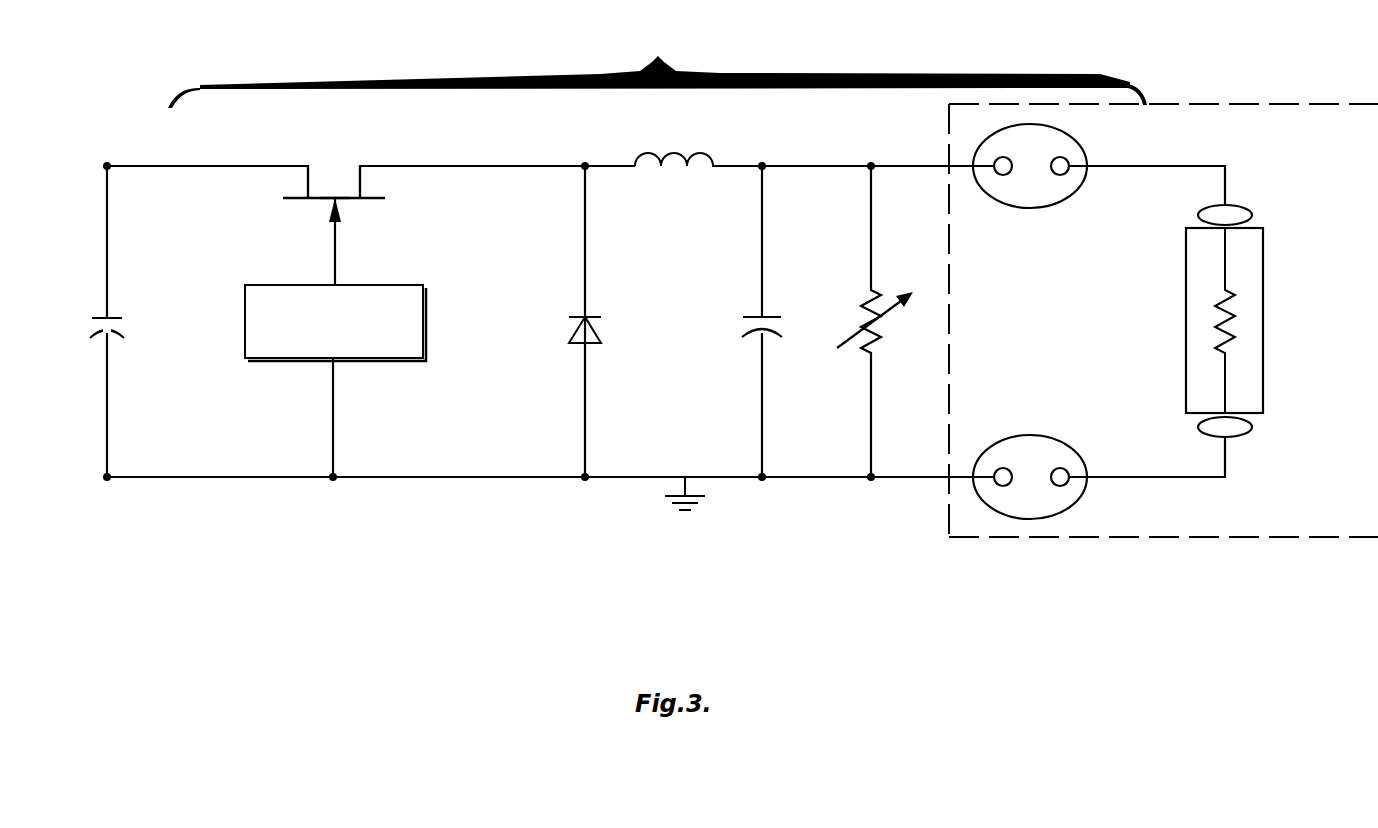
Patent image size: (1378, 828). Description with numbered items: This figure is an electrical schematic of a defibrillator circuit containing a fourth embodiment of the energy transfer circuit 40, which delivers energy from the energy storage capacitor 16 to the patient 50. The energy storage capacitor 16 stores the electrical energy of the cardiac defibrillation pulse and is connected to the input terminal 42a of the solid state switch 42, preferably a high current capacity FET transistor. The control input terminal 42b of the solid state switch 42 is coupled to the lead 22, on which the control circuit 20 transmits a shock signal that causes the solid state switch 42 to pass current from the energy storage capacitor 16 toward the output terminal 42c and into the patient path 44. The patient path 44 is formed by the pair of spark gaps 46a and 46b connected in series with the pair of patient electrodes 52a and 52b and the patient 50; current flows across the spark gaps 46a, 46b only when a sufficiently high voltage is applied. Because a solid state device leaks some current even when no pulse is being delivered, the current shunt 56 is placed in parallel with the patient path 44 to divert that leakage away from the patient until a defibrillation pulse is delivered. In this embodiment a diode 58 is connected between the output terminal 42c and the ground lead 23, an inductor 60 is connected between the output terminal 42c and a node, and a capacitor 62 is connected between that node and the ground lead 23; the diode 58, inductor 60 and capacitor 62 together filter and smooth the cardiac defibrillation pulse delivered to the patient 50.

The energy storage capacitor 16 is at (93, 317).
The control circuit 20 is at (259, 358).
The lead 22 is at (335, 238).
The ground lead 23 is at (424, 477).
The energy transfer circuit 40 is at (657, 66).
The solid state switch 42 is at (268, 184).
The input terminal 42a is at (250, 166).
The control input terminal 42b is at (350, 198).
The output terminal 42c is at (428, 166).
The patient path 44 is at (1345, 126).
The spark gap 46a is at (1030, 208).
The spark gap 46b is at (1022, 435).
The patient 50 is at (1186, 318).
The patient electrode 52a is at (1250, 213).
The patient electrode 52b is at (1250, 431).
The current shunt 56 is at (862, 302).
The diode 58 is at (578, 318).
The inductor 60 is at (680, 155).
The capacitor 62 is at (753, 318).